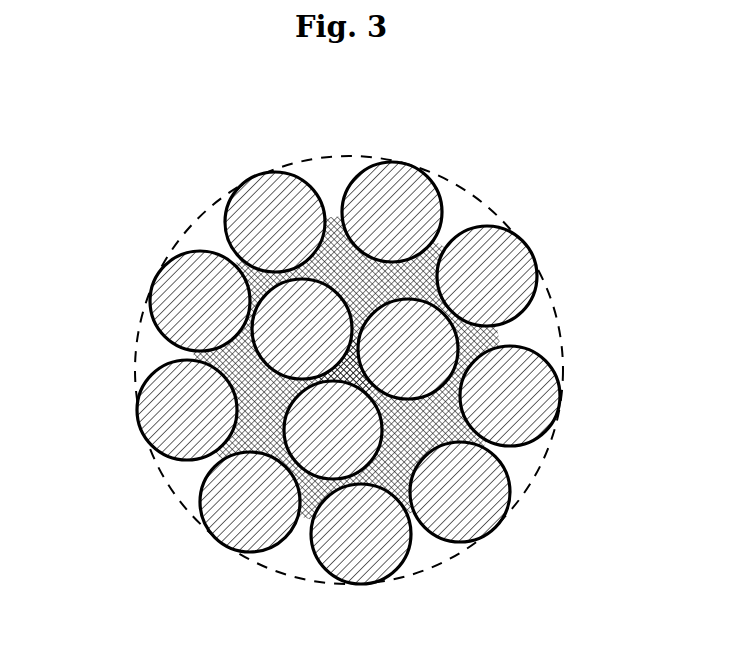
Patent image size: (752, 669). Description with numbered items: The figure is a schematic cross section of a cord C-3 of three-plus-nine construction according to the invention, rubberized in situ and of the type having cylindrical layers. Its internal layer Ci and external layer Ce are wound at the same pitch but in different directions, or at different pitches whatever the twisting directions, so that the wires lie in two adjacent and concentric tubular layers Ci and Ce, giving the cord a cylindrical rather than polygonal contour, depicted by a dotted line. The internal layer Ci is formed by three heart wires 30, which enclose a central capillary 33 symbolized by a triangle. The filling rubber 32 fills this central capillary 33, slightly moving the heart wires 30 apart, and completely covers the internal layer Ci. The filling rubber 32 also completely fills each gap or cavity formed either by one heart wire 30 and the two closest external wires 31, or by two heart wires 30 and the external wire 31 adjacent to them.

The cord C-3 is at (436, 142).
The external layer Ce is at (204, 228).
The internal layer Ci is at (272, 421).
The heart wire 30 is at (332, 440).
The external wire 31 is at (172, 407).
The filling rubber 32 is at (410, 277).
The central capillary 33 is at (360, 368).